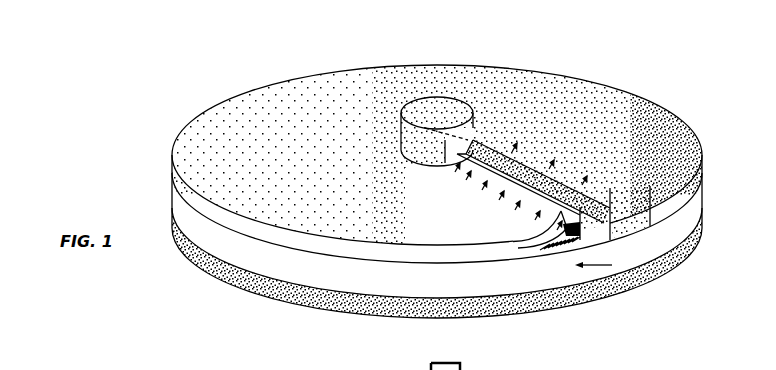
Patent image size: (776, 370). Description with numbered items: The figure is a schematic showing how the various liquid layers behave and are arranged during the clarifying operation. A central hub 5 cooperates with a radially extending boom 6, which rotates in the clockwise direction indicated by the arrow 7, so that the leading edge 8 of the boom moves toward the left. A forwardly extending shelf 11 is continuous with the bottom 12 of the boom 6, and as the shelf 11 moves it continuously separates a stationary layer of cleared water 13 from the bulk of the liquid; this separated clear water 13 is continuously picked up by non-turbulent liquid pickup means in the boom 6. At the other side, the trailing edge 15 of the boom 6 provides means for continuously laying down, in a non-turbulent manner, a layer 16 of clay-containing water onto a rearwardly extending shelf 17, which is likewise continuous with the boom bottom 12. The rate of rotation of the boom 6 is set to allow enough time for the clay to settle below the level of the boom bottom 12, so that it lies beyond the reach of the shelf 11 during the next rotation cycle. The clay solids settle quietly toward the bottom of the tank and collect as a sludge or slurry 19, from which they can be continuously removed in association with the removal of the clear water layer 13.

The central hub 5 is at (399, 100).
The boom 6 is at (478, 138).
The arrow 7 is at (603, 266).
The leading edge 8 is at (577, 243).
The forwardly extending shelf 11 is at (553, 253).
The bottom of the boom 12 is at (612, 243).
The layer of cleared water 13 is at (629, 96).
The trailing edge 15 is at (700, 178).
The layer of clay-containing water 16 is at (498, 186).
The rearwardly extending shelf 17 is at (693, 247).
The sludge or slurry 19 is at (700, 222).